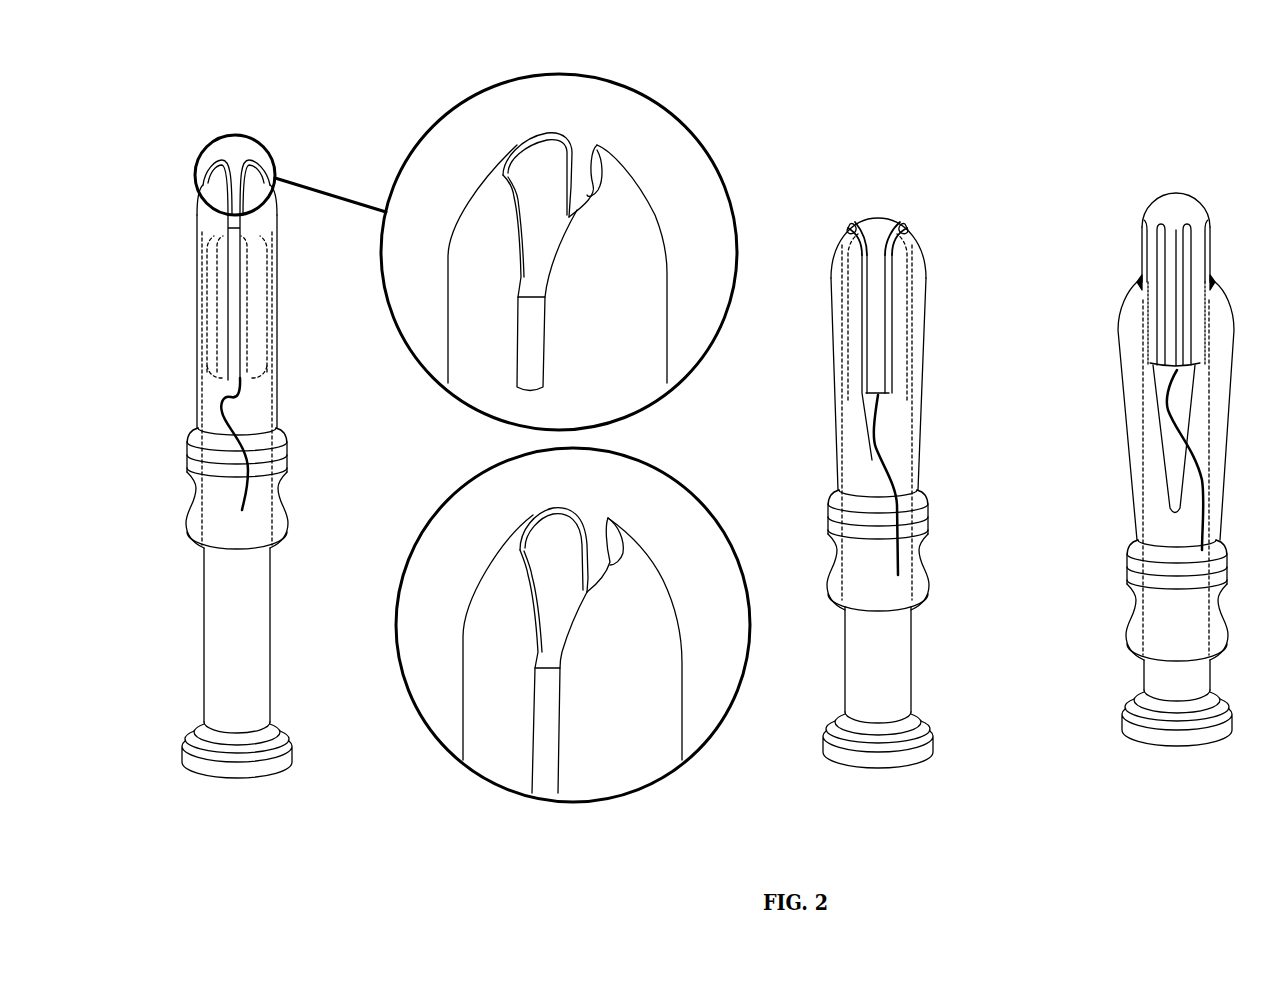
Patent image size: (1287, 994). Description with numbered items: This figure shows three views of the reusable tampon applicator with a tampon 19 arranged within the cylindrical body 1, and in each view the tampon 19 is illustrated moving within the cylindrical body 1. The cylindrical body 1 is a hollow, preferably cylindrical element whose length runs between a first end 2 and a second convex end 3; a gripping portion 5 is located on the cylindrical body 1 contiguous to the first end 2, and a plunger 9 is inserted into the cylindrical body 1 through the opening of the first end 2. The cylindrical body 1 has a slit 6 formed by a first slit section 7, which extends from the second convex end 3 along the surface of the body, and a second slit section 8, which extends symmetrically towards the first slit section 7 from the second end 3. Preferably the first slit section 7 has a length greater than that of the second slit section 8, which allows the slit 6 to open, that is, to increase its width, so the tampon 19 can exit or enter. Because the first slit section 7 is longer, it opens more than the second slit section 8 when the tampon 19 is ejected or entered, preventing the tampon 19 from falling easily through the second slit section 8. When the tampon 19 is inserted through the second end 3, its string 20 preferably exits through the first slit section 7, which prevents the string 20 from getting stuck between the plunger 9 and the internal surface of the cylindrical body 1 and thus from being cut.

The cylindrical body 1 is at (272, 228).
The first end 2 is at (197, 546).
The second convex end 3 is at (209, 170).
The gripping portion 5 is at (283, 522).
The slit 6 is at (529, 147).
The first slit section 7 is at (545, 697).
The second slit section 8 is at (542, 345).
The plunger 9 is at (255, 660).
The tampon 19 is at (878, 233).
The string 20 is at (235, 432).